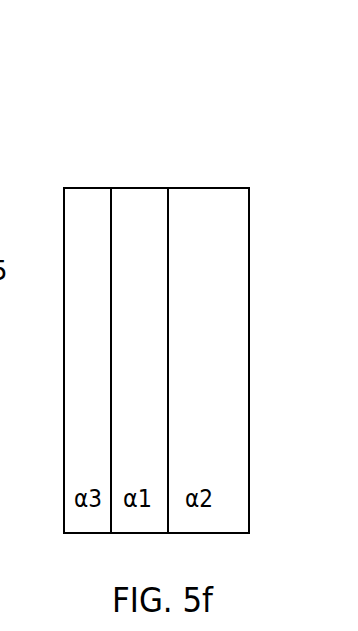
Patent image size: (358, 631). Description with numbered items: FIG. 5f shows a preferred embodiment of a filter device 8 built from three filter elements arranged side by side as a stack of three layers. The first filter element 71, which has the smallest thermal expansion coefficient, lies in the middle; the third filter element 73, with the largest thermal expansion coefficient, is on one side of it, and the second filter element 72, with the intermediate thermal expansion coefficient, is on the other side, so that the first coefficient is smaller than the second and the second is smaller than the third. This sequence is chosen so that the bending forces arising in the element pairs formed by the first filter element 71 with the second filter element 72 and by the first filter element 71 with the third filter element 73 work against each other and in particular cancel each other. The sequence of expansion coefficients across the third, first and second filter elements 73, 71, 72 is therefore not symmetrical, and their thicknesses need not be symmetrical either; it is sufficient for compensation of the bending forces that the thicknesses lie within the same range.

The layered element 8 is at (160, 125).
The first filter element 71 is at (142, 198).
The second filter element 72 is at (233, 253).
The third filter element 73 is at (79, 318).